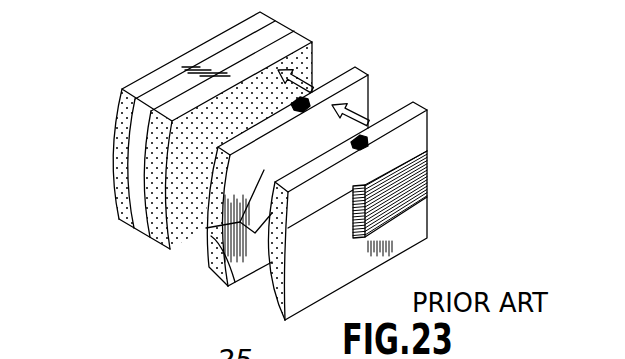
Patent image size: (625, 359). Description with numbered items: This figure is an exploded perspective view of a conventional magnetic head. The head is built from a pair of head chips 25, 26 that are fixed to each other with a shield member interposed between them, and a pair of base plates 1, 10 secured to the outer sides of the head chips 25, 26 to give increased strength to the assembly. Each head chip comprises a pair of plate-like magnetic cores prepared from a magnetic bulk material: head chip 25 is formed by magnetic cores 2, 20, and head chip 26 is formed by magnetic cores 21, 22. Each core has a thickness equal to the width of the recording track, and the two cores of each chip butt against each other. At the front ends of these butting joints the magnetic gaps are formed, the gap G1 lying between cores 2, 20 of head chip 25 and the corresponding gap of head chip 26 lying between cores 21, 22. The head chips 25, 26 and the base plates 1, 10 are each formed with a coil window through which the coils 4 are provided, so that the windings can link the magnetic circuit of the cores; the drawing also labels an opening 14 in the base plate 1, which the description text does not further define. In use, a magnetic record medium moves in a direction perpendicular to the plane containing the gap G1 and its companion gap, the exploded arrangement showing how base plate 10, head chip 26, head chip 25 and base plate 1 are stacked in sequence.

The base plate 10 is at (165, 130).
The head chip 26 is at (156, 135).
The magnetic core 21 is at (137, 145).
The magnetic core 22 is at (68, 85).
The magnetic core 2 is at (241, 200).
The magnetic core 20 is at (213, 263).
The head chip 25 is at (188, 246).
The gap G1 is at (246, 263).
The base plate 1 is at (366, 190).
The coil 4 is at (385, 180).
The window opening 14 is at (317, 260).